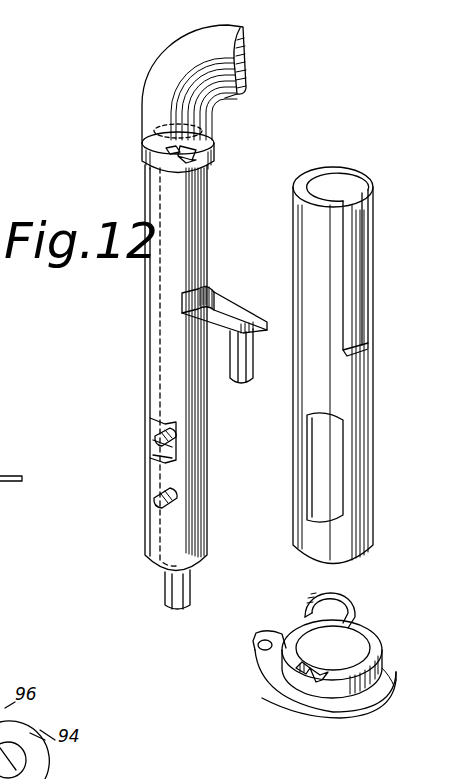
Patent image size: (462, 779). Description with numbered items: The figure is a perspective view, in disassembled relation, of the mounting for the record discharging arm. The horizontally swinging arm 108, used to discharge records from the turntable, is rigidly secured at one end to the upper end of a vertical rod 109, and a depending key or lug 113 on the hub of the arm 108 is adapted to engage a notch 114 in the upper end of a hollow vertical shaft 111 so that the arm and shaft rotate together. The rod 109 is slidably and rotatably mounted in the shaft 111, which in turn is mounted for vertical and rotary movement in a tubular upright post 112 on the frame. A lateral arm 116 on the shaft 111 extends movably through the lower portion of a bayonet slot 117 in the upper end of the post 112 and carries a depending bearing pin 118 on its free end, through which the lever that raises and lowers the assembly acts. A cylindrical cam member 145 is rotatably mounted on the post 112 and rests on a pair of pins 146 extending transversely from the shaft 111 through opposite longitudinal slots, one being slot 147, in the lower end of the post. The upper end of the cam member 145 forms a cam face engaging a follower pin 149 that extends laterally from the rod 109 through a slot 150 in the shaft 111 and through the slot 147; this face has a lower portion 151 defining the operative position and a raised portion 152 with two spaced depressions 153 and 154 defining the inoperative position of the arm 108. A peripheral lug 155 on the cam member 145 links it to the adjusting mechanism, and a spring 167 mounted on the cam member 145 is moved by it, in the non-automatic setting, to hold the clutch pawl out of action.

The horizontally swinging arm 108 is at (230, 40).
The depending key or lug 113 is at (186, 150).
The notch 114 is at (188, 171).
The hollow vertical shaft 111 is at (148, 350).
The lateral arm 116 is at (238, 309).
The depending bearing pin 118 is at (254, 367).
The follower pin 149 is at (150, 433).
The slot 150 is at (165, 462).
The pins 146 is at (152, 495).
The vertical rod 109 is at (172, 592).
The tubular upright post 112 is at (302, 395).
The bayonet slot 117 is at (363, 263).
The longitudinal slot 147 is at (327, 428).
The spring 167 is at (343, 598).
The raised portion 152 is at (360, 633).
The lower portion 151 is at (387, 670).
The peripheral lug 155 is at (253, 650).
The depression 154 is at (303, 677).
The depression 153 is at (307, 680).
The cylindrical cam member 145 is at (303, 693).